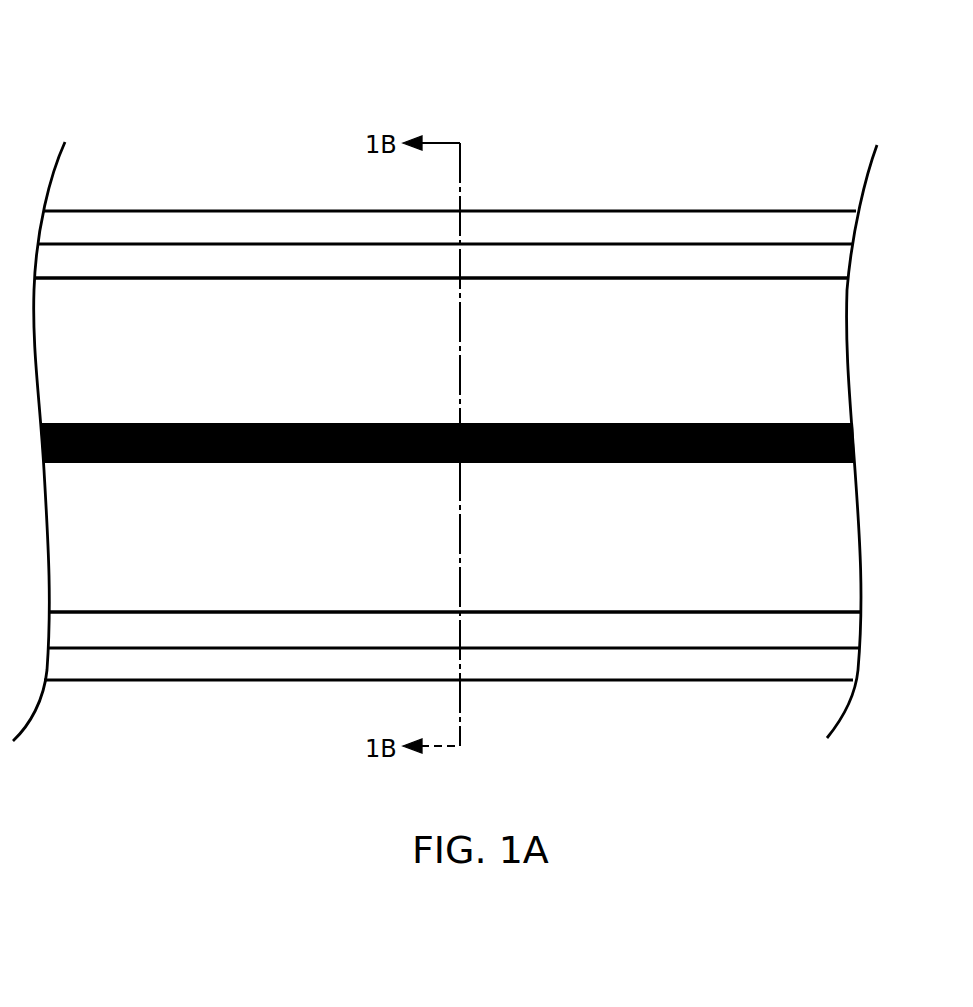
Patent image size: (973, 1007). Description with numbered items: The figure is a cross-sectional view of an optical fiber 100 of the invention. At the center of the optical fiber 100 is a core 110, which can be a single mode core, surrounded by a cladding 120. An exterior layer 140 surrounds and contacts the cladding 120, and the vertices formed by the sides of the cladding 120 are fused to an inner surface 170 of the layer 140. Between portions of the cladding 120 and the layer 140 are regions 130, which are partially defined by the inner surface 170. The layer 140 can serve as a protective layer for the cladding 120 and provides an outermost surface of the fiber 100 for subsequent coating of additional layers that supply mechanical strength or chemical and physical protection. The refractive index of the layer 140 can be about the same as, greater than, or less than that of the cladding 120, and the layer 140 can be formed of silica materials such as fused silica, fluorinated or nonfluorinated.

The optical fiber 100 is at (770, 106).
The core 110 is at (853, 442).
The cladding 120 is at (841, 348).
The regions 130 is at (841, 263).
The exterior layer 140 is at (841, 228).
The inner surface 170 is at (622, 243).